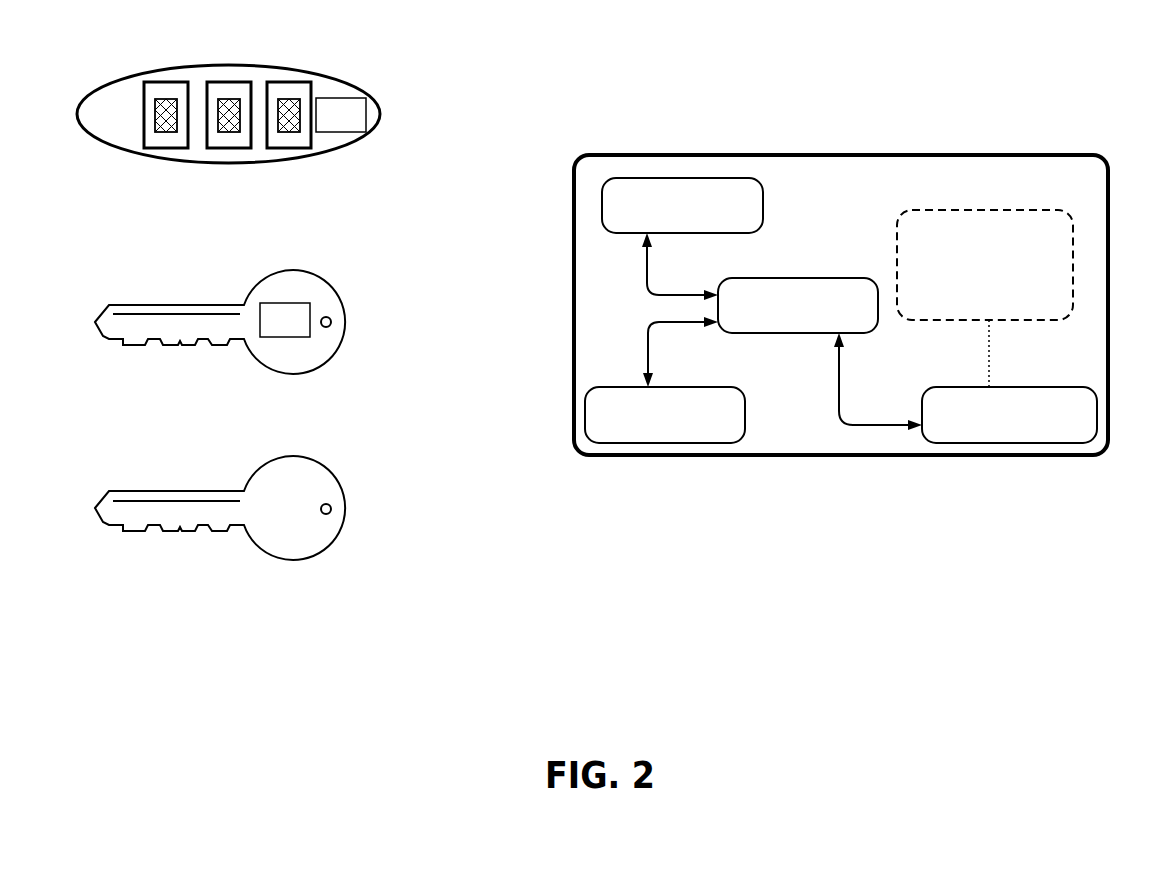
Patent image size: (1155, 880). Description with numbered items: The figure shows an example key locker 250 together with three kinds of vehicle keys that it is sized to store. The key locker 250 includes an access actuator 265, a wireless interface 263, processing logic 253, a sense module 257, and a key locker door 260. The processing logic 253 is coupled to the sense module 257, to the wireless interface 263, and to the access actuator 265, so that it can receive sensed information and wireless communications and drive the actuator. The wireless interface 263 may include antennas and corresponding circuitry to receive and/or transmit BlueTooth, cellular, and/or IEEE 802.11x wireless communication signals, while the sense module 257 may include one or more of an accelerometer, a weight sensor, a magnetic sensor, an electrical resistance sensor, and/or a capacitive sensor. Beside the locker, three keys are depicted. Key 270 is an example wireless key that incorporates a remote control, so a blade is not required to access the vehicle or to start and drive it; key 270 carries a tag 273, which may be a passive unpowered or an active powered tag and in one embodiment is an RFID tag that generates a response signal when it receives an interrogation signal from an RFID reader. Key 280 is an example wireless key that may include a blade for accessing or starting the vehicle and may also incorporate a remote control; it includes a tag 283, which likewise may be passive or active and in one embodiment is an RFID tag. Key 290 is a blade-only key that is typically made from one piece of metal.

The key locker 250 is at (1092, 188).
The processing logic 253 is at (843, 328).
The sense module 257 is at (737, 228).
The key locker door 260 is at (913, 210).
The wireless interface 263 is at (735, 438).
The access actuator 265 is at (1078, 438).
The key 270 is at (302, 70).
The tag 273 is at (357, 126).
The key 280 is at (296, 270).
The tag 283 is at (300, 330).
The key 290 is at (296, 456).